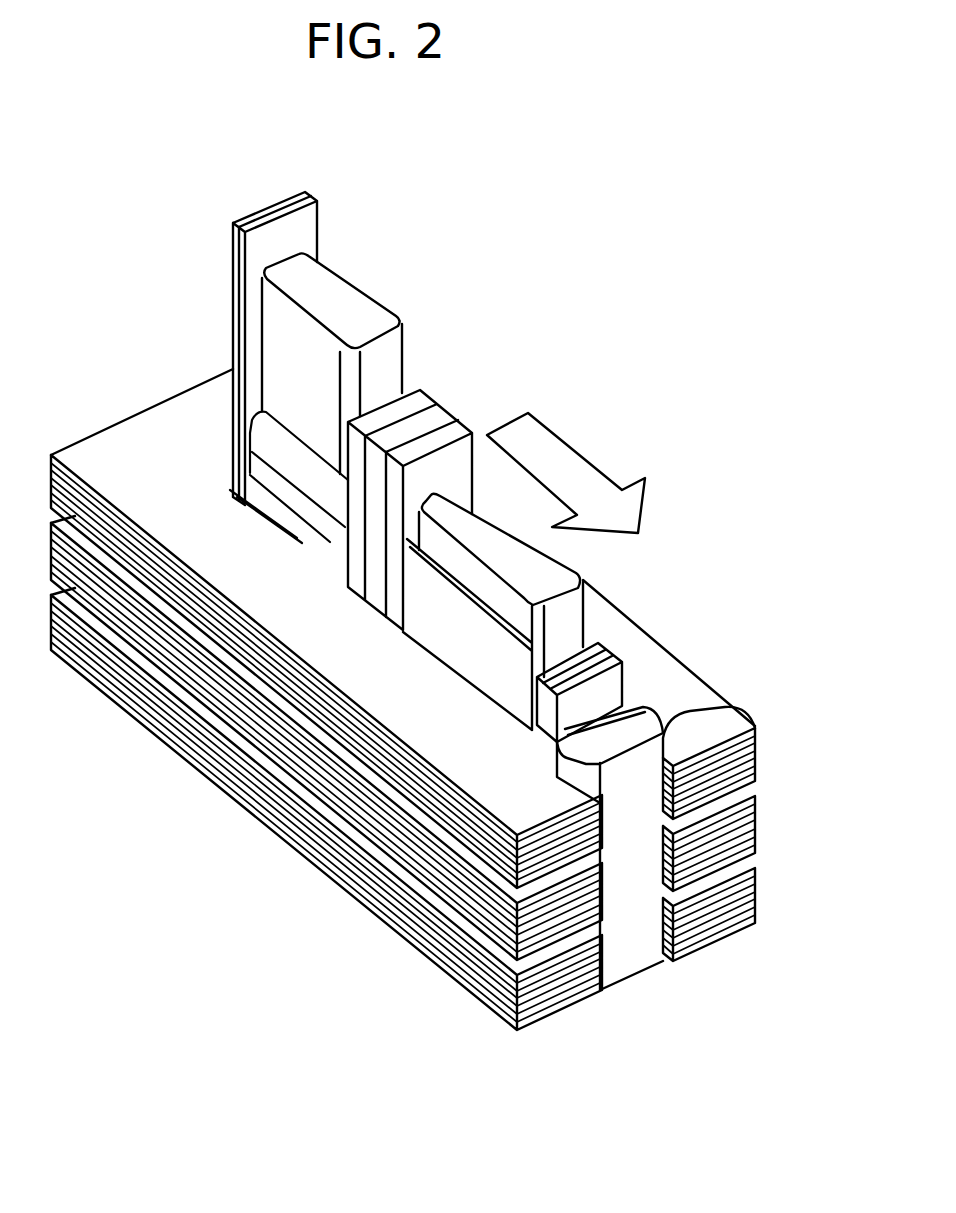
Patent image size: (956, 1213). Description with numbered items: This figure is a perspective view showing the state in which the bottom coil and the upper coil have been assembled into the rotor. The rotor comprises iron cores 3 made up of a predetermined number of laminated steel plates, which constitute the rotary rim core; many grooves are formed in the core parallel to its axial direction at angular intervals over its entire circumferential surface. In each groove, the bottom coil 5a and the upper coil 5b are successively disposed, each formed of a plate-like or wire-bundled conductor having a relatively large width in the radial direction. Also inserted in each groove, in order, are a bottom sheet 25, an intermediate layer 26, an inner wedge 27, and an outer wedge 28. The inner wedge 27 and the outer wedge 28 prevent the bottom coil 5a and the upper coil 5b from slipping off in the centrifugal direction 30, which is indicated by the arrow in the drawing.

The iron core 3 is at (697, 670).
The bottom coil 5a is at (355, 283).
The upper coil 5b is at (583, 568).
The bottom sheet 25 is at (317, 200).
The intermediate layer 26 is at (440, 410).
The inner wedge 27 is at (620, 645).
The outer wedge 28 is at (722, 704).
The centrifugal direction 30 is at (570, 443).